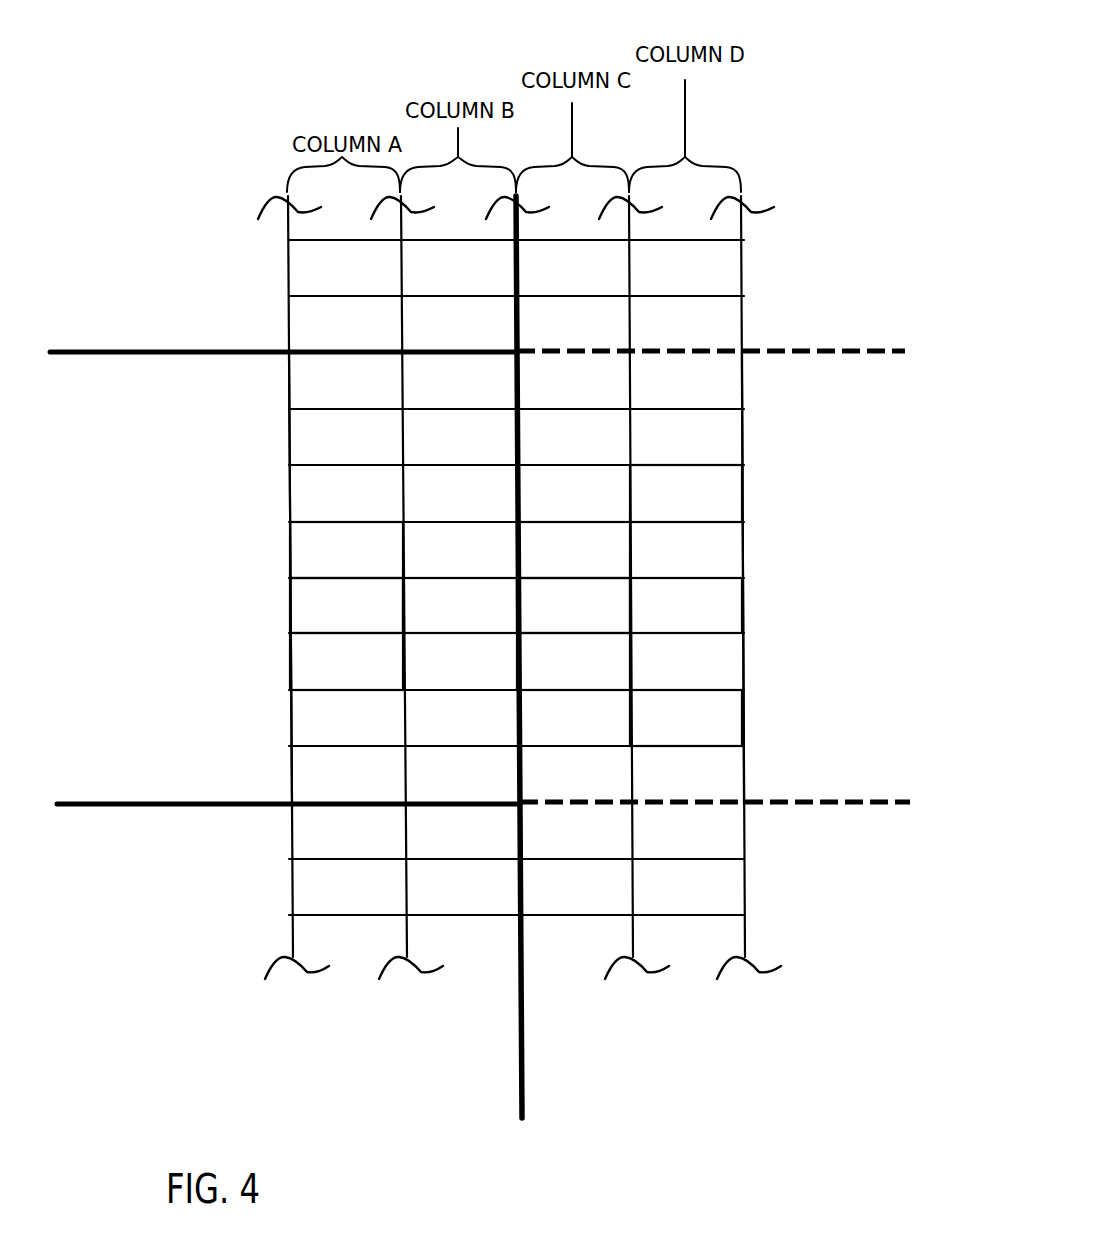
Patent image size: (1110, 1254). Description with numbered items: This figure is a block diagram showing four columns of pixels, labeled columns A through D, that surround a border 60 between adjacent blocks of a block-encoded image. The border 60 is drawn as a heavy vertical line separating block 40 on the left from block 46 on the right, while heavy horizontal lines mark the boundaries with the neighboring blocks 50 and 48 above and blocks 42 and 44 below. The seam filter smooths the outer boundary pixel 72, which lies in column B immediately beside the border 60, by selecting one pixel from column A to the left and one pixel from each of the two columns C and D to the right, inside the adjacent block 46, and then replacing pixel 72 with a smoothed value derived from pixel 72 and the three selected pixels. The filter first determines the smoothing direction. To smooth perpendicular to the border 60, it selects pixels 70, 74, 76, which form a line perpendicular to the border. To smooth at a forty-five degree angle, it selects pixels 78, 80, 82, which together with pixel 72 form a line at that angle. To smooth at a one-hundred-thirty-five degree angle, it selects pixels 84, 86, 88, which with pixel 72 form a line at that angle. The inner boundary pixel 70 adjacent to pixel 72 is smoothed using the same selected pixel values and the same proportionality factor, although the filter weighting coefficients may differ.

The block 40 is at (190, 577).
The adjacent block 42 is at (192, 891).
The adjacent block 44 is at (849, 887).
The adjacent block 46 is at (838, 574).
The adjacent block 48 is at (835, 235).
The adjacent block 50 is at (198, 236).
The border 60 is at (522, 730).
The inner boundary pixel 70 is at (354, 628).
The outer boundary pixel 72 is at (472, 628).
The pixel 74 is at (585, 628).
The pixel 76 is at (697, 628).
The pixel 78 is at (360, 678).
The pixel 80 is at (586, 563).
The pixel 82 is at (696, 508).
The pixel 84 is at (346, 550).
The pixel 86 is at (587, 678).
The pixel 88 is at (695, 734).